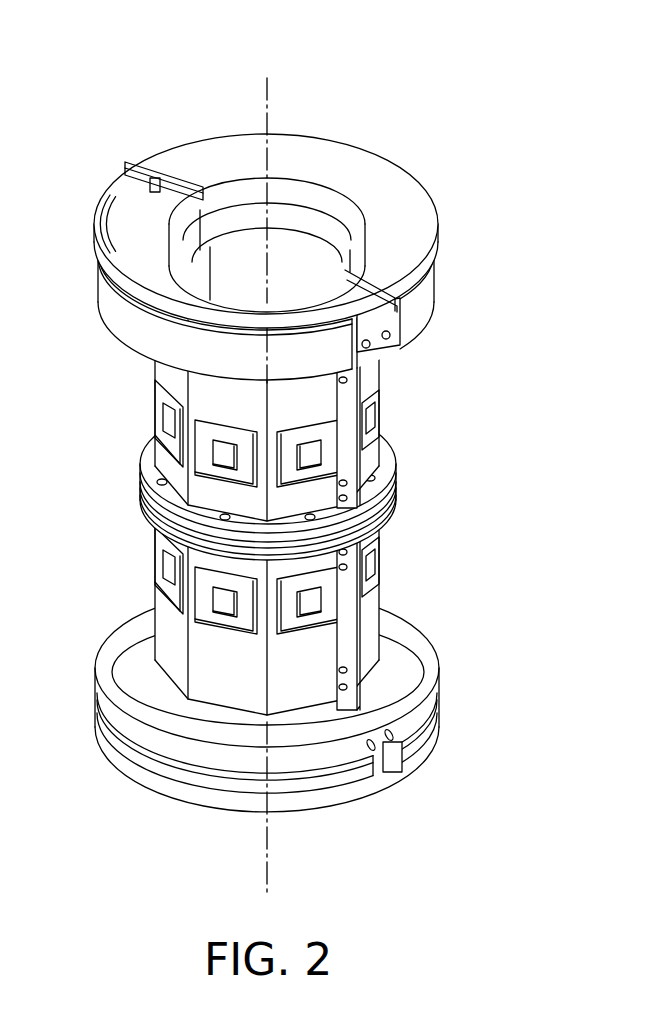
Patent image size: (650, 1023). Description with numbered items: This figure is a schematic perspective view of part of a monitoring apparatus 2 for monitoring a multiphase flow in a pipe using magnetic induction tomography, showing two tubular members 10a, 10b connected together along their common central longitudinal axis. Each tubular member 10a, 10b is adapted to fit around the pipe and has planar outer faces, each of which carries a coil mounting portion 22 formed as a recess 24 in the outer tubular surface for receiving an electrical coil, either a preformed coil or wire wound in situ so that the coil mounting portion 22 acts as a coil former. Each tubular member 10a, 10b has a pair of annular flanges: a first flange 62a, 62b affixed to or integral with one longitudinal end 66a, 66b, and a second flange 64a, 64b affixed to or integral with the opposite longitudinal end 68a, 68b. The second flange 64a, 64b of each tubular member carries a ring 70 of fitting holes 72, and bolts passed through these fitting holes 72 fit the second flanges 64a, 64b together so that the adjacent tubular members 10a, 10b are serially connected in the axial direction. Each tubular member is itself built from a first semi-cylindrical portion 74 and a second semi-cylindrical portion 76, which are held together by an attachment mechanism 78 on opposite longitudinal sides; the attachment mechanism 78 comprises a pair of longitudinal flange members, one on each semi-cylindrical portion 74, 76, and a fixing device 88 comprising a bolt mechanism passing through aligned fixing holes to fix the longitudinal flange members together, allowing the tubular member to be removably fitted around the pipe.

The monitoring apparatus 2 is at (104, 82).
The tubular member 10a is at (345, 172).
The tubular member 10b is at (235, 752).
The coil mounting portion 22 is at (203, 445).
The recess 24 is at (307, 517).
The first flange 62a is at (398, 182).
The first flange 62b is at (277, 740).
The second flange 64a is at (385, 508).
The second flange 64b is at (350, 556).
The longitudinal end 66a is at (352, 357).
The longitudinal end 66b is at (345, 628).
The longitudinal end 68a is at (372, 479).
The longitudinal end 68b is at (377, 537).
The ring of fitting holes 70 is at (383, 522).
The fitting hole 72 is at (205, 608).
The first semi-cylindrical portion 74 is at (298, 157).
The second semi-cylindrical portion 76 is at (277, 376).
The attachment mechanism 78 is at (405, 682).
The fixing device 88 is at (367, 375).